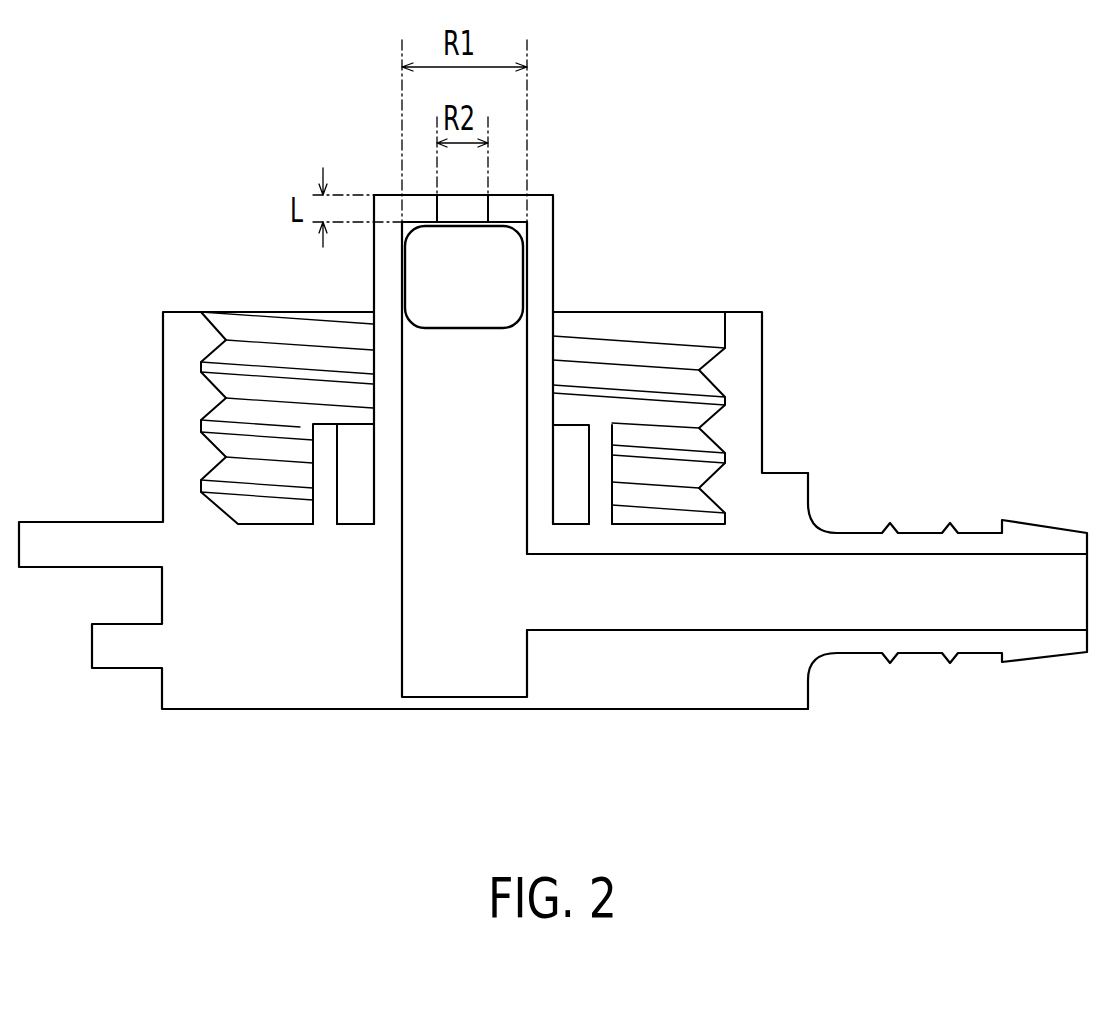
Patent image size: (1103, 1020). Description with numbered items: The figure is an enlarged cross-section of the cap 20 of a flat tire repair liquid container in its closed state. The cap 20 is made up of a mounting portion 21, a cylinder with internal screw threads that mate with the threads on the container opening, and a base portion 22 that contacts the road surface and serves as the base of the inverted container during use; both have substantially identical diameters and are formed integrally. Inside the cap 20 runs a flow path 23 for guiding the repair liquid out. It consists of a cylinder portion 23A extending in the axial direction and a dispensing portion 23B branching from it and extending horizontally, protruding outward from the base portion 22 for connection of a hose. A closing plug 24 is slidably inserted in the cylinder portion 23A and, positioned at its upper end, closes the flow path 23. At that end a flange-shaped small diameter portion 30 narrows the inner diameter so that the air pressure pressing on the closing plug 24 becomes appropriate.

The cap 20 is at (553, 463).
The mounting portion 21 is at (743, 413).
The base portion 22 is at (770, 683).
The flow path 23 is at (744, 531).
The cylinder portion 23A is at (475, 615).
The dispensing portion 23B is at (807, 674).
The closing plug 24 is at (483, 272).
The small diameter portion 30 is at (483, 212).